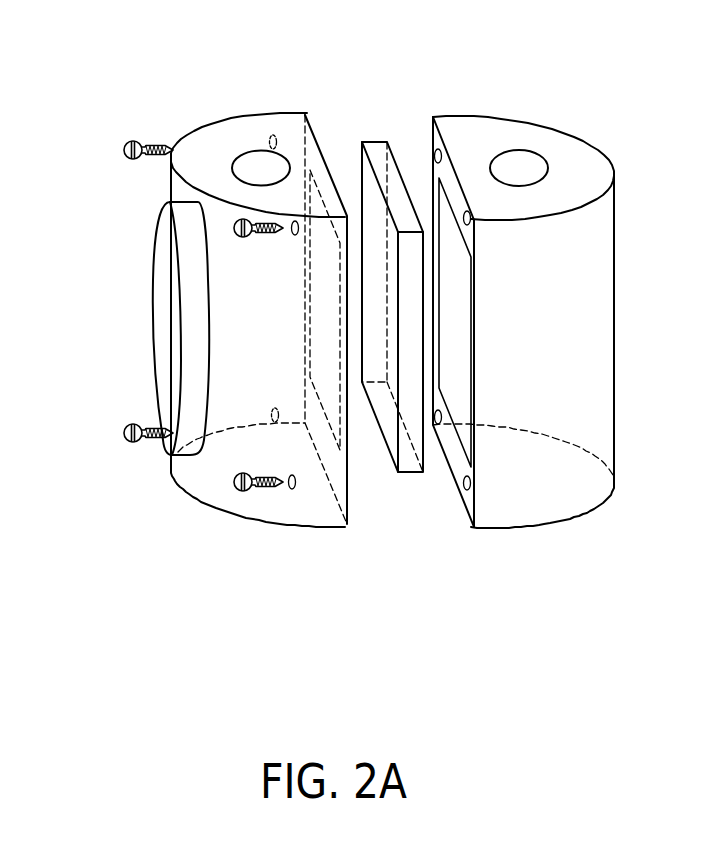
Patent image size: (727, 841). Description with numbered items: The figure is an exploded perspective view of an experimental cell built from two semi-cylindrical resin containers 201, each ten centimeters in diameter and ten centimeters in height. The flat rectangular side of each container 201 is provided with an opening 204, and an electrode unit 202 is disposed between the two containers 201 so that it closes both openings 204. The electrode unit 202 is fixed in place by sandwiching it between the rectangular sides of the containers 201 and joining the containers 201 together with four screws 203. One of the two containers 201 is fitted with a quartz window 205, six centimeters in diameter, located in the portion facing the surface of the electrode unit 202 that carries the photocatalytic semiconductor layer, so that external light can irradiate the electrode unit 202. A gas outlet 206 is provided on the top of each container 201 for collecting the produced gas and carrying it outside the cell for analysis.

The semi-cylindrical resin container 201 is at (295, 128).
The electrode unit 202 is at (382, 430).
The screw 203 is at (126, 143).
The opening 204 is at (332, 442).
The quartz window 205 is at (168, 327).
The gas outlet 206 is at (259, 167).